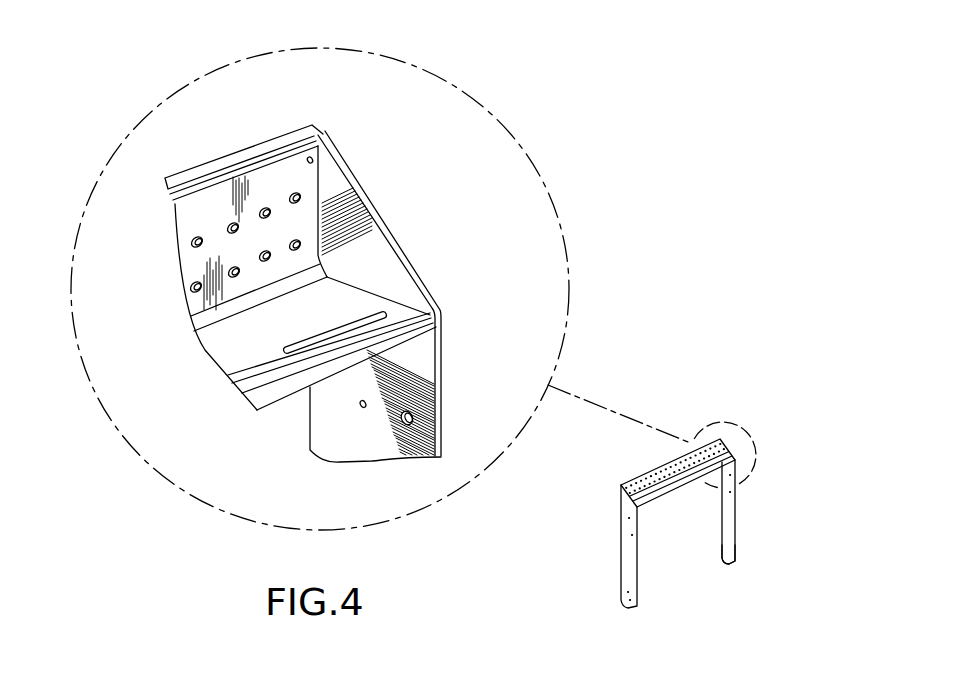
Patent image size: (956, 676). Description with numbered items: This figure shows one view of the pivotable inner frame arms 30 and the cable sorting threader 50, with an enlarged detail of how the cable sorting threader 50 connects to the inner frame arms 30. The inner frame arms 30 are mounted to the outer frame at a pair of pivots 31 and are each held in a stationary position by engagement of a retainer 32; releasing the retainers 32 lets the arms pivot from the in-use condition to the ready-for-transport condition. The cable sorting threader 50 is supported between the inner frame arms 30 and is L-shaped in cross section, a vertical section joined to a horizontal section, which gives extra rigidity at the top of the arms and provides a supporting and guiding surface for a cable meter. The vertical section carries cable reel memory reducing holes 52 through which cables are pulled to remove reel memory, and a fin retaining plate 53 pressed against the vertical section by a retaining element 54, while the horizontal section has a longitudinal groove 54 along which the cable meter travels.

The inner frame arms 30 is at (440, 403).
The pivots 31 is at (727, 558).
The retainer 32 is at (730, 543).
The cable sorting threader 50 is at (283, 234).
The cable reel memory reducing holes 52 is at (265, 207).
The fin retaining plate 53 is at (300, 127).
The longitudinal groove 54 is at (230, 370).